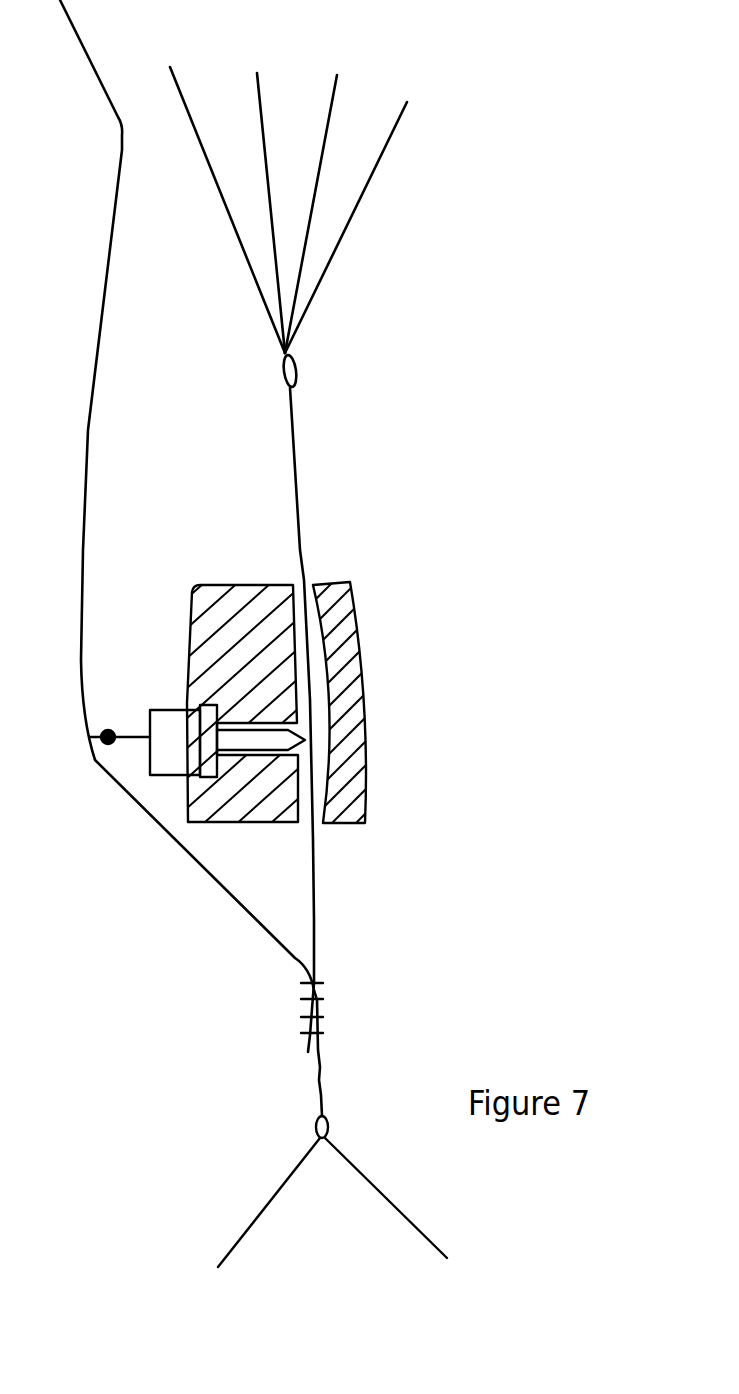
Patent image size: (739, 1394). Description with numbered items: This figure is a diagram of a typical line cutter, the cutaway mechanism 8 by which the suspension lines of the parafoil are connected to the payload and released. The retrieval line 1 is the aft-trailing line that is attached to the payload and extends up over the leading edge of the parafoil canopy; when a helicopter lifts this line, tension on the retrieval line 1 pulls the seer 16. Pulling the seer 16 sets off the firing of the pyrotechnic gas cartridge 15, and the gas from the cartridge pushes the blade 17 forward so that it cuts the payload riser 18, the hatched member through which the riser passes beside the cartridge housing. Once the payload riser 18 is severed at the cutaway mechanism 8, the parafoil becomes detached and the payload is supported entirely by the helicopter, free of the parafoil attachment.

The retrieval line 1 is at (85, 508).
The cutaway mechanism 8 is at (362, 663).
The pyrotechnic gas cartridge 15 is at (150, 778).
The seer 16 is at (133, 737).
The blade 17 is at (273, 740).
The payload riser 18 is at (298, 488).